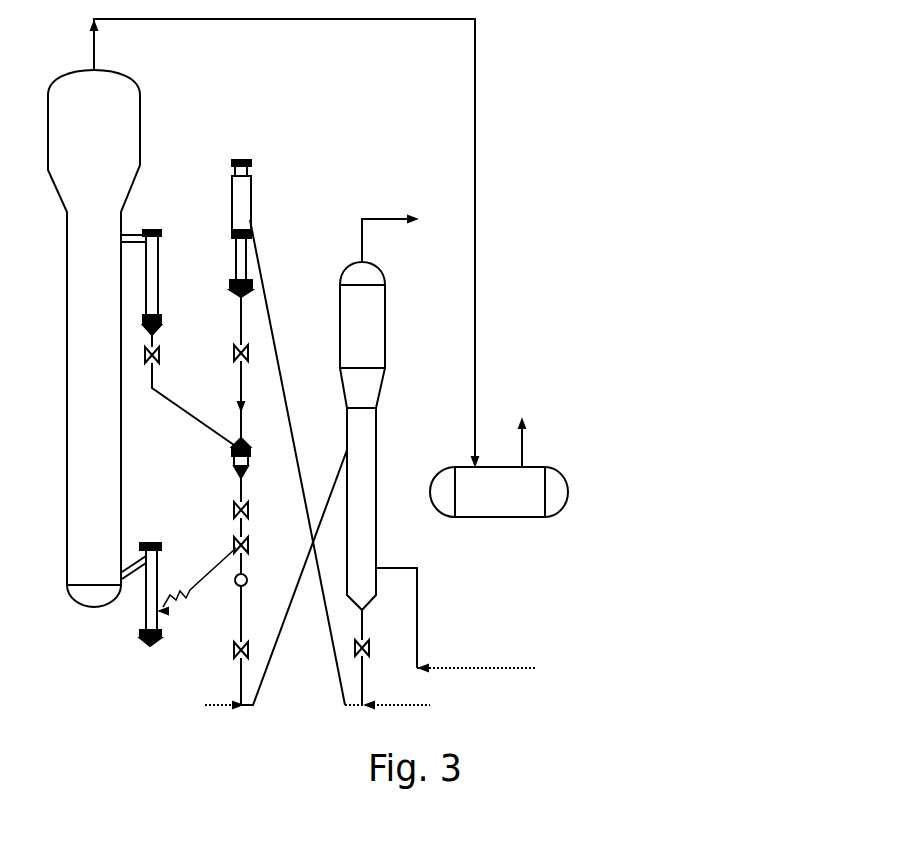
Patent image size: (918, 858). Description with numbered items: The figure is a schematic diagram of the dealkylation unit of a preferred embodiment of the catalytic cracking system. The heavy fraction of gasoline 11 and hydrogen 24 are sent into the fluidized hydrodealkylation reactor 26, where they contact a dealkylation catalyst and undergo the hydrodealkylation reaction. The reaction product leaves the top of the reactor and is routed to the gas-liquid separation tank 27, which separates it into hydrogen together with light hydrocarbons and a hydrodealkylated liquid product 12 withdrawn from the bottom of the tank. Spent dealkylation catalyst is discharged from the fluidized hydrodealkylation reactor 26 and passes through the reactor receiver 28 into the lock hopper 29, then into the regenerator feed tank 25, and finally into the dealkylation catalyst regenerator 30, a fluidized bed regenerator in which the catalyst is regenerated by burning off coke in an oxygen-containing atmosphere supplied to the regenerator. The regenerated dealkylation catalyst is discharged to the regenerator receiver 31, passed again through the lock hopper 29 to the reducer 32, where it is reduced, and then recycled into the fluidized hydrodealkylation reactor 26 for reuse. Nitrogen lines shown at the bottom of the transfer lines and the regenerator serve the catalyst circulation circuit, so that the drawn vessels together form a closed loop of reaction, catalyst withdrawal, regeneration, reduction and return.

The heavy fraction of gasoline 11 is at (91, 628).
The hydrodealkylated liquid product 12 is at (561, 540).
The hydrogen 24 is at (94, 610).
The regenerator feed tank 25 is at (233, 579).
The fluidized hydrodealkylation reactor 26 is at (94, 338).
The gas-liquid separation tank 27 is at (617, 468).
The reactor receiver 28 is at (178, 337).
The lock hopper 29 is at (221, 470).
The dealkylation catalyst regenerator 30 is at (437, 462).
The regenerator receiver 31 is at (287, 432).
The reducer 32 is at (179, 594).